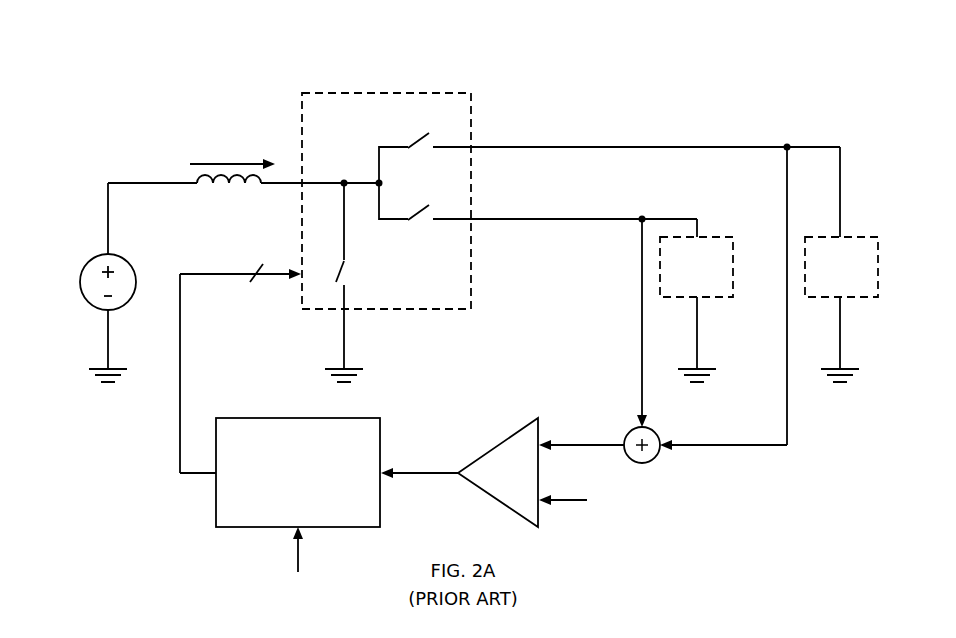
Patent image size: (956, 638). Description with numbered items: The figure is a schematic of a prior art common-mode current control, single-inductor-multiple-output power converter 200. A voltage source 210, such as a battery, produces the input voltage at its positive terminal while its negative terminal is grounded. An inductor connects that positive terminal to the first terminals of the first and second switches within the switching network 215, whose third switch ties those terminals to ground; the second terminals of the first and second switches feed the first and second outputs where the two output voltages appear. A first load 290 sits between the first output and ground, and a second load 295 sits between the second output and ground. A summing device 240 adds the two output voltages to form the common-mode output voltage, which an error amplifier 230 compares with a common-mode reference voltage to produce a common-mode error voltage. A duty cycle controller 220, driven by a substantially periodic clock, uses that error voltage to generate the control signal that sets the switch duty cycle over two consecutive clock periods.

The power converter 200 is at (510, 62).
The voltage source 210 is at (96, 258).
The switching network 215 is at (366, 93).
The duty cycle controller 220 is at (298, 472).
The error amplifier 230 is at (515, 425).
The summing device 240 is at (655, 431).
The first load 290 is at (696, 309).
The second load 295 is at (841, 309).